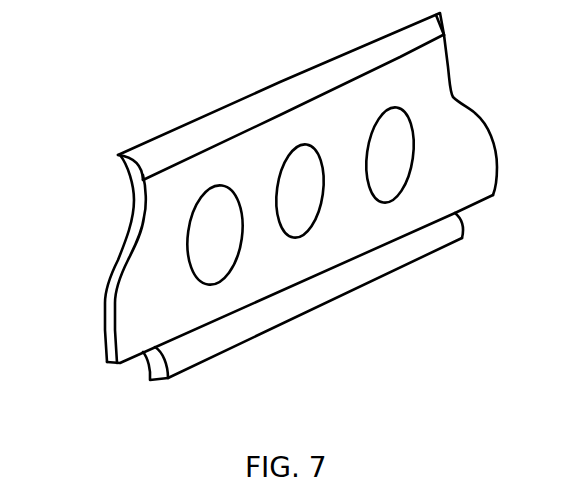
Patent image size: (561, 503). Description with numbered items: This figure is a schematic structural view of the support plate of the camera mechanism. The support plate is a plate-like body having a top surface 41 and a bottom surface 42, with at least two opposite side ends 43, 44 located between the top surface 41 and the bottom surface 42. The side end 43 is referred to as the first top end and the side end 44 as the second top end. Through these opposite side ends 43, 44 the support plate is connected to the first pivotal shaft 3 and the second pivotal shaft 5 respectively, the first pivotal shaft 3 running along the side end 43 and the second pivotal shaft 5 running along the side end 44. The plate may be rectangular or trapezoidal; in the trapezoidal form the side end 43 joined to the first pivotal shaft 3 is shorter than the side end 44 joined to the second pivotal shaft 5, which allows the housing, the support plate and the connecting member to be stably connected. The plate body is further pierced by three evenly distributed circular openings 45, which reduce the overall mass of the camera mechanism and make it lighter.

The first pivotal shaft 3 is at (315, 96).
The second pivotal shaft 5 is at (292, 316).
The top surface 41 is at (132, 222).
The bottom surface 42 is at (288, 210).
The side end 43 is at (420, 48).
The side end 44 is at (137, 355).
The opening 45 is at (213, 238).